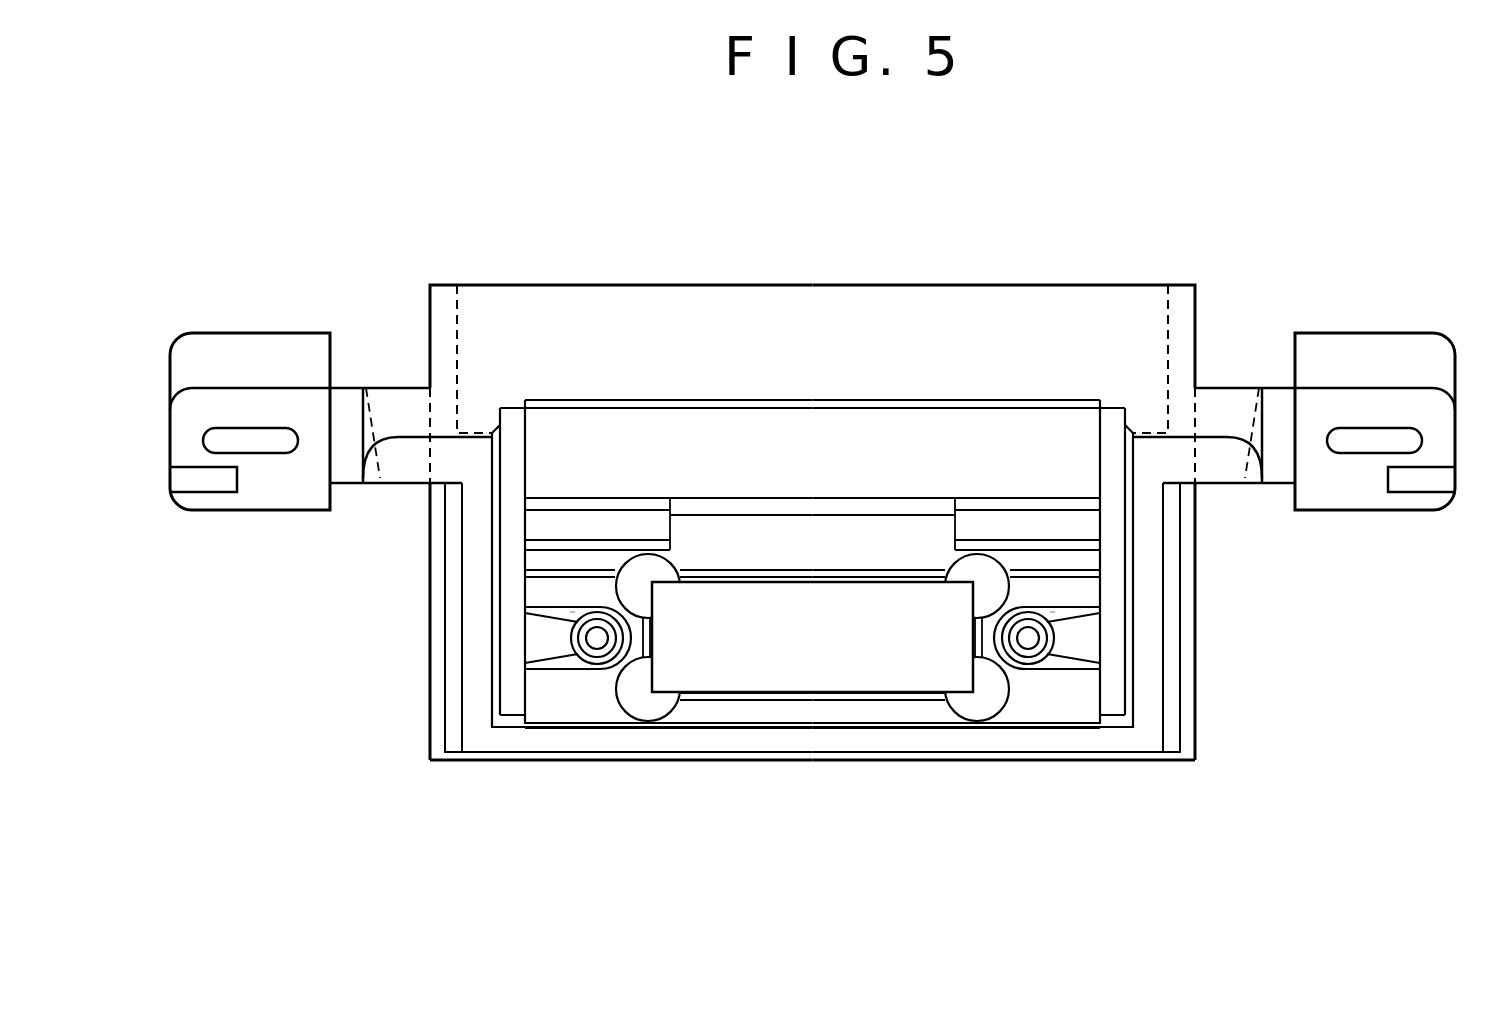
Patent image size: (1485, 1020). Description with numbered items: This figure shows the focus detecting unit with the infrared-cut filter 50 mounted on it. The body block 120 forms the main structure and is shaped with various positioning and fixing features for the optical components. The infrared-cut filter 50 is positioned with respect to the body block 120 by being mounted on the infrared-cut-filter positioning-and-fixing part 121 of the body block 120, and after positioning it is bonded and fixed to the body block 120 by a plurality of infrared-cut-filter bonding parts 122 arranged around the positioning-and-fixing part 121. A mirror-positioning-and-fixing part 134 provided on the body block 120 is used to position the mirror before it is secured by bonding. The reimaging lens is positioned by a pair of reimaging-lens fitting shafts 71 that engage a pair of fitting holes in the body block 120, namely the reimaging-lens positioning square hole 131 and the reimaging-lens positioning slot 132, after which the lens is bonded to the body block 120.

The body block 120 is at (1073, 302).
The infrared-cut-filter positioning-and-fixing part 121 is at (925, 700).
The infrared-cut-filter bonding parts 122 is at (647, 707).
The reimaging-lens positioning square hole 131 is at (1047, 635).
The reimaging-lens positioning slot 132 is at (577, 623).
The mirror-positioning-and-fixing part 134 is at (512, 707).
The infrared-cut filter 50 is at (805, 672).
The reimaging-lens fitting shafts 71 is at (597, 640).